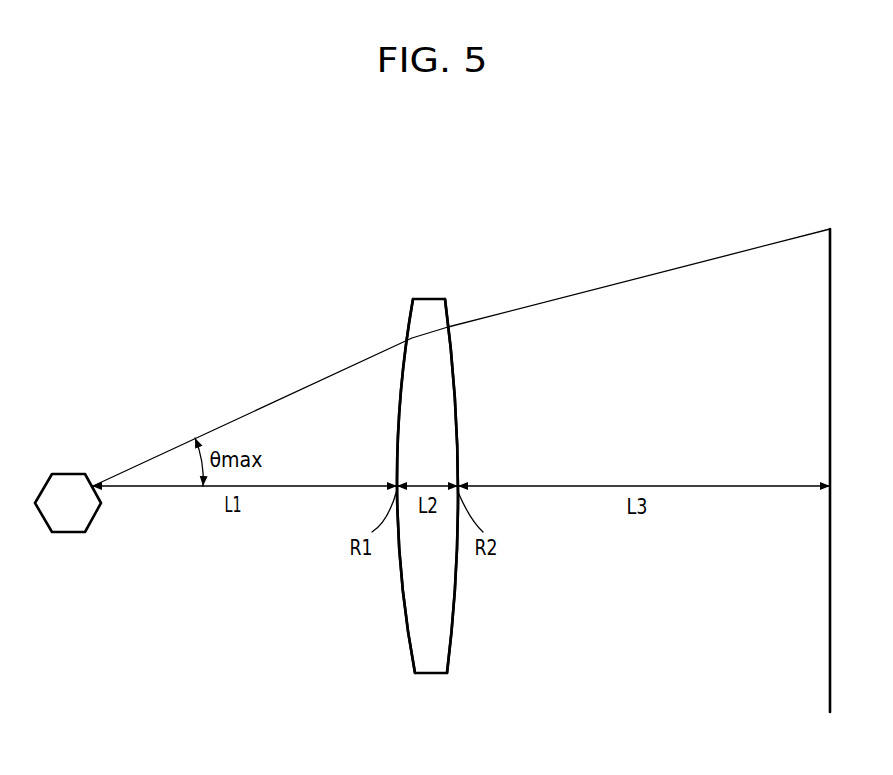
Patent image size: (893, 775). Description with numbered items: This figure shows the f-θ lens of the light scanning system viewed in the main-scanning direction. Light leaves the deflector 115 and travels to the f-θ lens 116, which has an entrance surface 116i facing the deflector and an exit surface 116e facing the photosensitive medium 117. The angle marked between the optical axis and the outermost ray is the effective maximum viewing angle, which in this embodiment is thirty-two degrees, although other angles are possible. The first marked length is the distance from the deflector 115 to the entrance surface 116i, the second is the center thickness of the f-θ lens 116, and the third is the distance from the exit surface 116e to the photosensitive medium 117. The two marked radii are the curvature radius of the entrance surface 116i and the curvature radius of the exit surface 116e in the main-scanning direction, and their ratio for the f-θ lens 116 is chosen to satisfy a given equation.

The deflector 115 is at (70, 472).
The f-θ lens 116 is at (460, 640).
The exit surface 116e is at (458, 598).
The entrance surface 116i is at (410, 623).
The photosensitive medium 117 is at (828, 607).